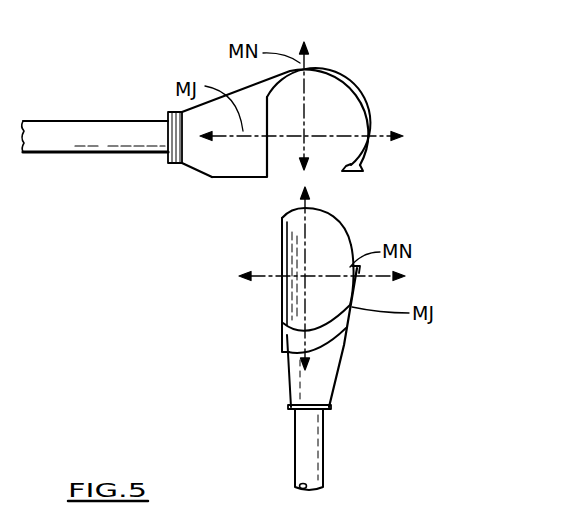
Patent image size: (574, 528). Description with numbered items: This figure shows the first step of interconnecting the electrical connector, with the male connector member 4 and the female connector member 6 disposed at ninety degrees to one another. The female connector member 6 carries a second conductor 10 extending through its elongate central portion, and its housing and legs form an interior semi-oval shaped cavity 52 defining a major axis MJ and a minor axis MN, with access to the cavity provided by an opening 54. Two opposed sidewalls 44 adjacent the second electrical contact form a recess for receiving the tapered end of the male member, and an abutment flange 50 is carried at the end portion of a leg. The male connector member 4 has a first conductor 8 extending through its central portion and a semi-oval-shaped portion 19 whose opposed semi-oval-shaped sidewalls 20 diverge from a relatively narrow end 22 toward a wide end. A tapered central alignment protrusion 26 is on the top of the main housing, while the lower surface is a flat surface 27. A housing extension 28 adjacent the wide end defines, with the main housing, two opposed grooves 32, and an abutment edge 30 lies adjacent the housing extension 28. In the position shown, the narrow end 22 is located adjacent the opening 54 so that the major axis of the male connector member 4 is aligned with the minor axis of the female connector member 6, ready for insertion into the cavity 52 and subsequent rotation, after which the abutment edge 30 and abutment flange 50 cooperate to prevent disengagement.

The second conductor 10 is at (112, 120).
The female connector member 6 is at (368, 92).
The semi-oval shaped cavity 52 is at (330, 128).
The abutment flange 50 is at (363, 172).
The opposed sidewalls 44 is at (262, 152).
The opening 54 is at (285, 181).
The narrow end 22 is at (305, 228).
The semi-oval-shaped portion 19 is at (333, 253).
The flat surface 27 is at (281, 243).
The semi-oval-shaped sidewalls 20 is at (293, 282).
The alignment protrusion 26 is at (363, 282).
The grooves 32 is at (280, 330).
The abutment edge 30 is at (292, 348).
The male connector member 4 is at (358, 324).
The housing extension 28 is at (323, 378).
The first conductor 8 is at (323, 443).